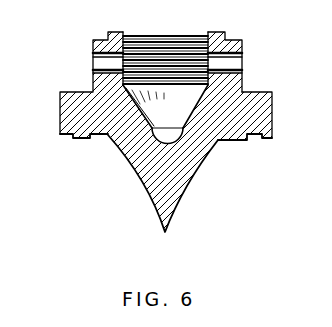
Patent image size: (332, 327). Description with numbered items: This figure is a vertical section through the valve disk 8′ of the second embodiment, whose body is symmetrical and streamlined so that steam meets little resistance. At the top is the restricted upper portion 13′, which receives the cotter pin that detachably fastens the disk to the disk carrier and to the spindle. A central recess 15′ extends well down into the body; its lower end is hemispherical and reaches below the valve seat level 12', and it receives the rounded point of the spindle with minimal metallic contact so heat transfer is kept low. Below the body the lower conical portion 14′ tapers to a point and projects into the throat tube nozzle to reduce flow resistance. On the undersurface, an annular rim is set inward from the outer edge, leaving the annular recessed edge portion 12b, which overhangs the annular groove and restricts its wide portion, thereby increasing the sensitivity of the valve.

The restricted upper portion 13′ is at (228, 46).
The valve disk 8′ is at (273, 113).
The valve seat level 12' is at (151, 118).
The annular recessed edge portion 12b is at (66, 137).
The lower conical portion 14′ is at (152, 180).
The central recess 15′ is at (165, 106).